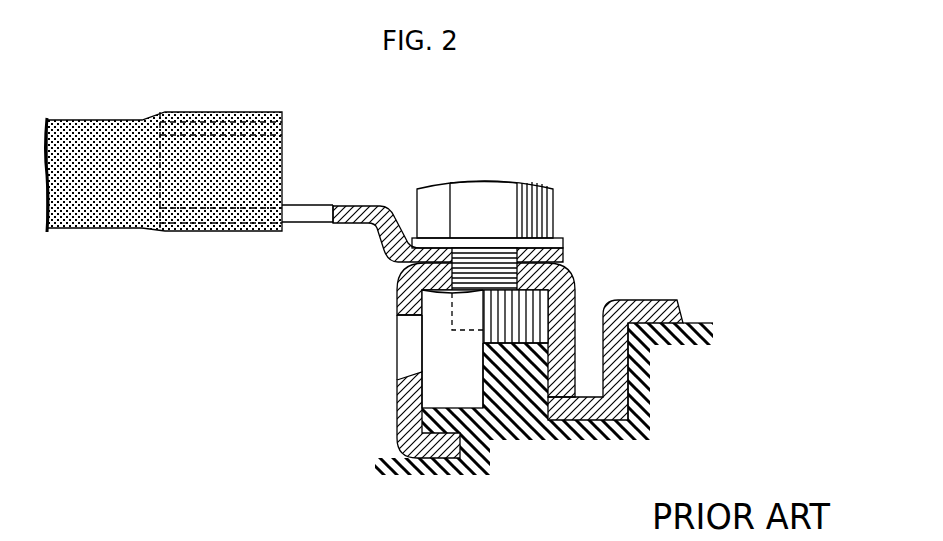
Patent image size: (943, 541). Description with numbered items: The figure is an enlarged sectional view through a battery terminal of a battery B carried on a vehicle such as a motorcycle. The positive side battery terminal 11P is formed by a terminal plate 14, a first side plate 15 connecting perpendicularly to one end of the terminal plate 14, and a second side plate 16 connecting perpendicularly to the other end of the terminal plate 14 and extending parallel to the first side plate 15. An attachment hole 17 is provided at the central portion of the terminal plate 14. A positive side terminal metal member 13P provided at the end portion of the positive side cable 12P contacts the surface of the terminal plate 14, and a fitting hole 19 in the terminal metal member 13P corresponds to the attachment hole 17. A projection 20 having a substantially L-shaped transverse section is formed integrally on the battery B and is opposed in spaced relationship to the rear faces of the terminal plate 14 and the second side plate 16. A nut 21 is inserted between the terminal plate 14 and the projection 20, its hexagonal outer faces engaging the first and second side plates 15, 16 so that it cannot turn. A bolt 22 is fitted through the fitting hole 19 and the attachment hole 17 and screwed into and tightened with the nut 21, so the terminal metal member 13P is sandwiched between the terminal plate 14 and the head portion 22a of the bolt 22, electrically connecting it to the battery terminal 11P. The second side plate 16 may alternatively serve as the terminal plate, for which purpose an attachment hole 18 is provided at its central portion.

The positive side cable 12P is at (107, 135).
The positive side terminal metal member 13P is at (563, 250).
The positive side battery terminal 11P is at (580, 320).
The terminal plate 14 is at (533, 240).
The bolt 22 is at (577, 296).
The head portion of the bolt 22a is at (487, 186).
The fitting hole 19 is at (468, 250).
The attachment hole 17 is at (410, 289).
The nut 21 is at (435, 331).
The attachment hole 18 is at (407, 379).
The second side plate 16 is at (398, 407).
The projection 20 is at (492, 352).
The first side plate 15 is at (630, 352).
The battery B is at (700, 316).